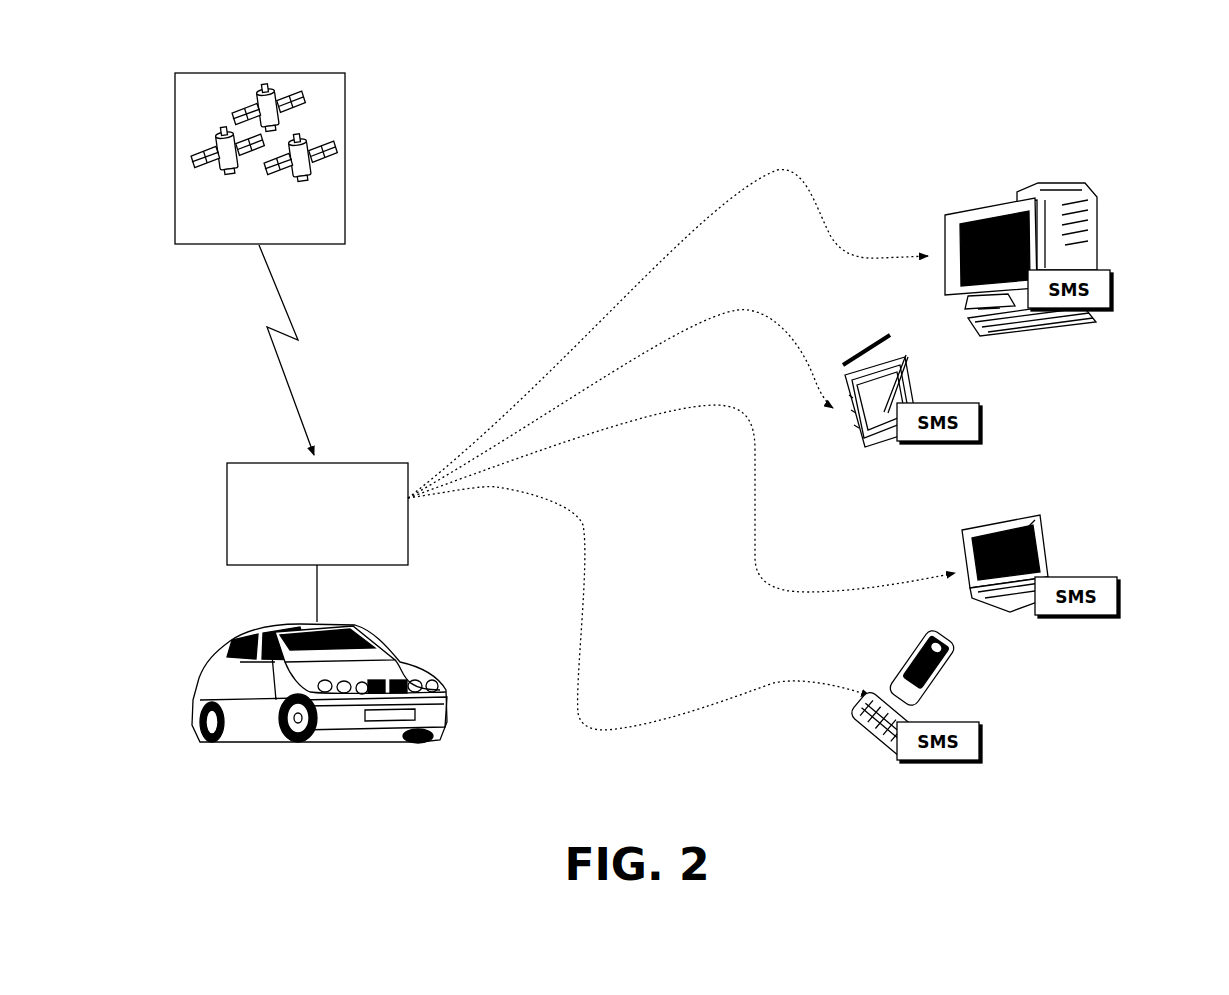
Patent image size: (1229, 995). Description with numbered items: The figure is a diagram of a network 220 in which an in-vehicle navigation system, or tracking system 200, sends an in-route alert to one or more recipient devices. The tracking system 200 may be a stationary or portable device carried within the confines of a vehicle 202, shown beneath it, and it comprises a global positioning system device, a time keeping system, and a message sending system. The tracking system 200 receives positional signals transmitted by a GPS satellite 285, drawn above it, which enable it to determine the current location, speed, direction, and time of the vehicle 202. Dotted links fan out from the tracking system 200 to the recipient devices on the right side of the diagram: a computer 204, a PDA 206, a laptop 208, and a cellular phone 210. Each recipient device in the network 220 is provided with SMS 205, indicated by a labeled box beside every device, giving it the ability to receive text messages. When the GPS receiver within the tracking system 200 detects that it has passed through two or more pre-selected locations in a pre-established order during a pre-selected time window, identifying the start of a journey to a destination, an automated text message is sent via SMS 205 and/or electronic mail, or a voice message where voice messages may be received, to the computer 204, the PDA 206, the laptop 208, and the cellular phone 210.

The network 220 is at (690, 50).
The GPS satellite 285 is at (246, 231).
The tracking system 200 is at (301, 557).
The vehicle 202 is at (447, 695).
The computer 204 is at (1020, 185).
The SMS 205 is at (1110, 295).
The PDA 206 is at (878, 352).
The laptop 208 is at (1040, 517).
The cellular phone 210 is at (940, 670).